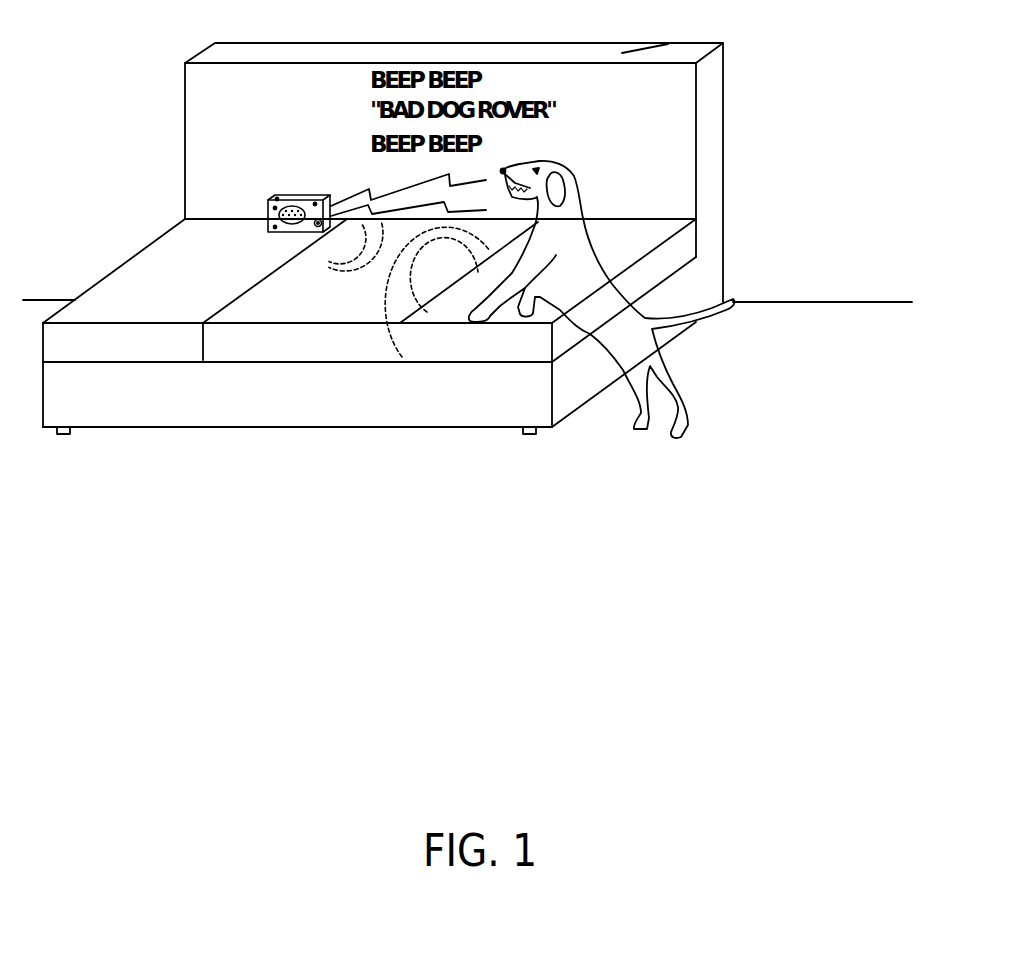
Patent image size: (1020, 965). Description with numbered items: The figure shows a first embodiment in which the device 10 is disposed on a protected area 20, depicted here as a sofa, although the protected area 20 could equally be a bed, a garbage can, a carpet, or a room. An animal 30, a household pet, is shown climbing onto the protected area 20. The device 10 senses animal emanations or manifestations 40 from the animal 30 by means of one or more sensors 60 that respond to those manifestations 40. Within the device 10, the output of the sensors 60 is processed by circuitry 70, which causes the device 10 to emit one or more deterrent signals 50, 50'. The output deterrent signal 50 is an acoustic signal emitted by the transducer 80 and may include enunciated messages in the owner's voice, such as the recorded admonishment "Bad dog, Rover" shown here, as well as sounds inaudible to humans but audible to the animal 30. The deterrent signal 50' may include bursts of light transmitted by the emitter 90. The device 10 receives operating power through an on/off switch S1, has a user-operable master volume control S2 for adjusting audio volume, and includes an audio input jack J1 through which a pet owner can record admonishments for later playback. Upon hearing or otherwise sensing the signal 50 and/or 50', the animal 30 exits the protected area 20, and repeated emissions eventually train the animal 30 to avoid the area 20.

The device 10 is at (278, 200).
The protected area 20 is at (757, 72).
The animal 30 is at (570, 237).
The animal emanations (manifestations) 40 is at (383, 287).
The output deterrent signal 50 is at (408, 188).
The deterrent signal (light) 50' is at (378, 247).
The sensor 60 is at (315, 203).
The circuitry 70 is at (301, 233).
The transducer 80 is at (296, 231).
The emitter 90 is at (320, 227).
The on/off switch S1 is at (268, 208).
The master volume control S2 is at (270, 229).
The audio input jack J1 is at (278, 198).